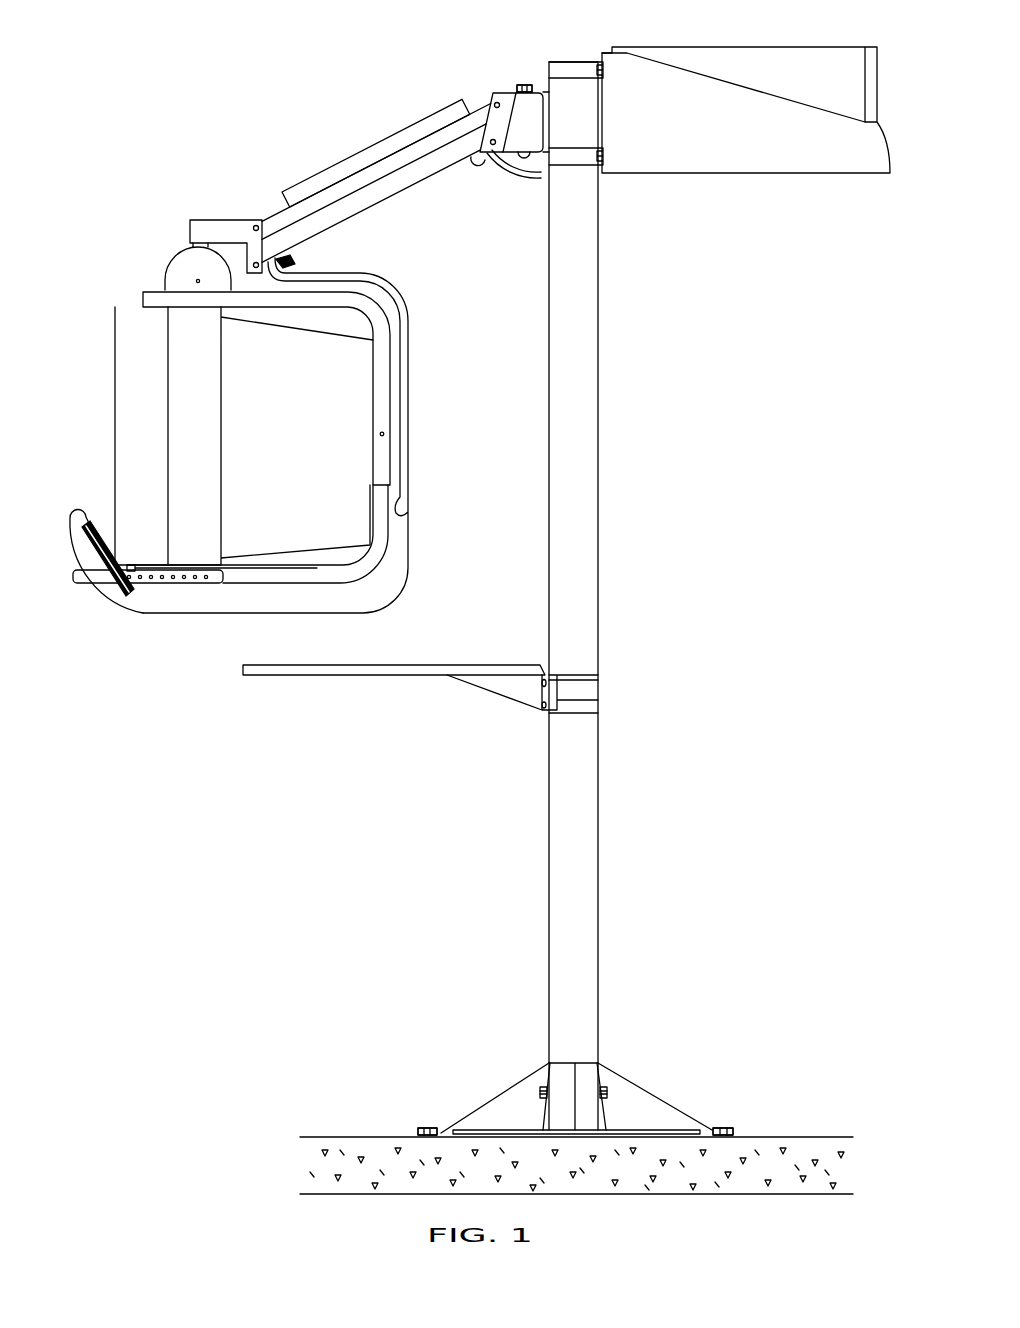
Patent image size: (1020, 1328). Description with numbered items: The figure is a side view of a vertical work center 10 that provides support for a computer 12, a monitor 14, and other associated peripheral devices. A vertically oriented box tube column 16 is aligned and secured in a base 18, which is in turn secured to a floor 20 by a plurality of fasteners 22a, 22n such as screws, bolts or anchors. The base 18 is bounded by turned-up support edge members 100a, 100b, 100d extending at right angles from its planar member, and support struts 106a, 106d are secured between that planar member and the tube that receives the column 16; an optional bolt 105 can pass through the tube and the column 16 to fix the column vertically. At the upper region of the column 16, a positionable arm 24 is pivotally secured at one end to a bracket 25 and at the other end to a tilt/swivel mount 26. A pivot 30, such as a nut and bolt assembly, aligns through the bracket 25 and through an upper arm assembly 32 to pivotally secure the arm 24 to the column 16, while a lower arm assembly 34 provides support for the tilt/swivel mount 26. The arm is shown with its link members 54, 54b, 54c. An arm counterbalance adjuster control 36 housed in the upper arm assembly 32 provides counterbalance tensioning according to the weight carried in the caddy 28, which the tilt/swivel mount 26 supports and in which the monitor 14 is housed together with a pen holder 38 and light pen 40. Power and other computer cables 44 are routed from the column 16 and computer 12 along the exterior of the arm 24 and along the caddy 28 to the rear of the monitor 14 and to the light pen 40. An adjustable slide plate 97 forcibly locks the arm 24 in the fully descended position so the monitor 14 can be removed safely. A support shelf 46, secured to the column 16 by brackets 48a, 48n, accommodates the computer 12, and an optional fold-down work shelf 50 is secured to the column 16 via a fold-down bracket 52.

The vertical work center 10 is at (165, 145).
The computer 12 is at (788, 79).
The monitor 14 is at (247, 466).
The box tube column 16 is at (590, 643).
The base 18 is at (662, 1113).
The floor 20 is at (815, 1137).
The fastener 22a is at (437, 1130).
The fastener 22n is at (722, 1128).
The positionable arm 24 is at (389, 162).
The bracket 25 is at (542, 100).
The tilt/swivel mount 26 is at (185, 262).
The caddy 28 is at (382, 347).
The pivot 30 is at (526, 85).
The upper arm assembly 32 is at (520, 105).
The lower arm assembly 34 is at (247, 207).
The arm counterbalance adjuster control 36 is at (488, 184).
The pen holder 38 is at (127, 588).
The light pen 40 is at (88, 527).
The computer cables 44 is at (405, 373).
The support shelf 46 is at (673, 131).
The bracket 48a is at (567, 70).
The bracket 48n is at (577, 153).
The fold-down work shelf 50 is at (415, 670).
The fold-down bracket 52 is at (532, 697).
The arm assembly 54 is at (389, 162).
The upper arm link 54b is at (377, 167).
The lower arm link 54c is at (387, 197).
The adjustable slide plate 97 is at (296, 265).
The support edge member 100a is at (542, 1128).
The support edge member 100b is at (420, 1130).
The support edge member 100d is at (732, 1135).
The bolt 105 is at (607, 1090).
The support strut 106a is at (500, 1095).
The support strut 106d is at (647, 1087).